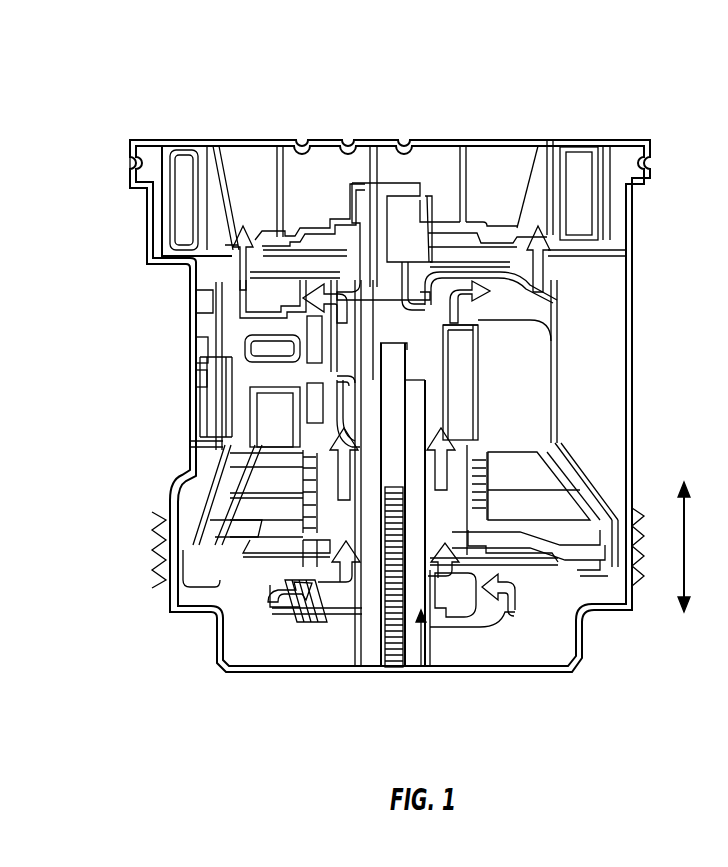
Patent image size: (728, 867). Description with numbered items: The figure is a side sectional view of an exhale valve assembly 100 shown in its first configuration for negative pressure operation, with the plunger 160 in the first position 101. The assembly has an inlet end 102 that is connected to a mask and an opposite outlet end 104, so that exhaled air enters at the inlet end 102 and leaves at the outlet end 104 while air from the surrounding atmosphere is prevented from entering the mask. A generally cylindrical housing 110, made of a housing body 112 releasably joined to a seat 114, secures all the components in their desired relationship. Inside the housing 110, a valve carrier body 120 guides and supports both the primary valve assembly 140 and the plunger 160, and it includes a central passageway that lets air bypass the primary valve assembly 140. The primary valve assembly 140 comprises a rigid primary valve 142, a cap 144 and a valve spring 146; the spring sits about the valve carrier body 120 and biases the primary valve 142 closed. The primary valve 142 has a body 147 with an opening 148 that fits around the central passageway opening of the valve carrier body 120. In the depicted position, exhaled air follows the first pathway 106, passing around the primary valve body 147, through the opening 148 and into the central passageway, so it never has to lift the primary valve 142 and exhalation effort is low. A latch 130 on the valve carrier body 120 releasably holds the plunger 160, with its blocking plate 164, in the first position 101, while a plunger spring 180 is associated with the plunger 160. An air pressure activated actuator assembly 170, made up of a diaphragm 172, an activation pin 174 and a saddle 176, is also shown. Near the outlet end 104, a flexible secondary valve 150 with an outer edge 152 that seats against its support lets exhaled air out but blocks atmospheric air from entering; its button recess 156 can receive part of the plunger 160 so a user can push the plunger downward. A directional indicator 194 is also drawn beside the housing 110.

The exhale valve assembly 100 is at (366, 68).
The first position 101 is at (398, 109).
The inlet end 102 is at (148, 636).
The outlet end 104 is at (123, 167).
The first pathway 106 is at (500, 268).
The housing 110 is at (138, 150).
The housing body 112 is at (180, 143).
The seat 114 is at (247, 674).
The valve carrier body 120 is at (540, 350).
The latch 130 is at (450, 391).
The primary valve assembly 140 is at (560, 580).
The primary valve 142 is at (583, 613).
The cap 144 is at (302, 536).
The valve spring 146 is at (300, 478).
The body 147 is at (262, 570).
The opening 148 is at (425, 670).
The secondary valve 150 is at (327, 219).
The outer edge 152 is at (520, 228).
The button recess 156 is at (418, 205).
The plunger 160 is at (378, 644).
The blocking plate 164 is at (336, 617).
The air pressure activated actuator assembly 170 is at (131, 310).
The diaphragm 172 is at (213, 361).
The activation pin 174 is at (265, 375).
The saddle 176 is at (343, 418).
The plunger spring 180 is at (400, 660).
The axial direction arrow 194 is at (690, 546).